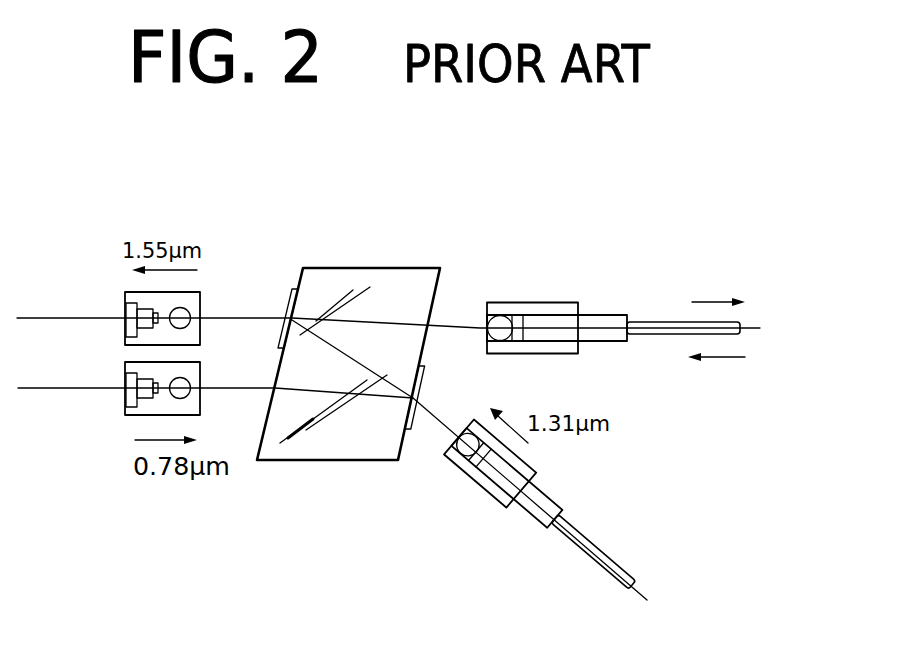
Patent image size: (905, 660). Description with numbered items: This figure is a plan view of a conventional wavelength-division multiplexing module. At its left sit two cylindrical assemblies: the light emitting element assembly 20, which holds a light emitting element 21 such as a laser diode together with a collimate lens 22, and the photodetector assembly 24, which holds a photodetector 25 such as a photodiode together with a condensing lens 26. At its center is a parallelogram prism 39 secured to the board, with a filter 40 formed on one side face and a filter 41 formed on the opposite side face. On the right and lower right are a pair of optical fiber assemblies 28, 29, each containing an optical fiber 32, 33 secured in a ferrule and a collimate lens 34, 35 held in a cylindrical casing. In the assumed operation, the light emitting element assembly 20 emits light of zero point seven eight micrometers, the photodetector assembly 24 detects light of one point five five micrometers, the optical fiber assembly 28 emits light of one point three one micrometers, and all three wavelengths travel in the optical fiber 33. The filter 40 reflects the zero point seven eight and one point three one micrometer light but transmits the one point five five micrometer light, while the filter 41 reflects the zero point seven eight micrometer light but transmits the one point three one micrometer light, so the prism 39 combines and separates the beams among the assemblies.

The light emitting element assembly 20 is at (133, 416).
The light emitting element 21 is at (139, 383).
The collimate lens 22 is at (189, 381).
The photodetector assembly 24 is at (126, 293).
The photodetector 25 is at (140, 313).
The condensing lens 26 is at (189, 311).
The optical fiber assembly 28 is at (533, 470).
The optical fiber assembly 29 is at (553, 302).
The optical fiber 32 is at (605, 552).
The optical fiber 33 is at (670, 322).
The collimate lens 34 is at (461, 456).
The collimate lens 35 is at (500, 320).
The parallelogram prism 39 is at (362, 276).
The filter 40 is at (292, 291).
The filter 41 is at (408, 432).